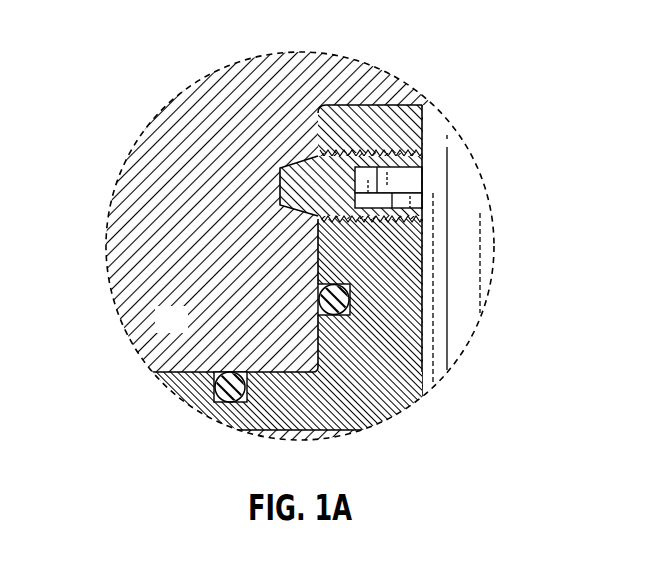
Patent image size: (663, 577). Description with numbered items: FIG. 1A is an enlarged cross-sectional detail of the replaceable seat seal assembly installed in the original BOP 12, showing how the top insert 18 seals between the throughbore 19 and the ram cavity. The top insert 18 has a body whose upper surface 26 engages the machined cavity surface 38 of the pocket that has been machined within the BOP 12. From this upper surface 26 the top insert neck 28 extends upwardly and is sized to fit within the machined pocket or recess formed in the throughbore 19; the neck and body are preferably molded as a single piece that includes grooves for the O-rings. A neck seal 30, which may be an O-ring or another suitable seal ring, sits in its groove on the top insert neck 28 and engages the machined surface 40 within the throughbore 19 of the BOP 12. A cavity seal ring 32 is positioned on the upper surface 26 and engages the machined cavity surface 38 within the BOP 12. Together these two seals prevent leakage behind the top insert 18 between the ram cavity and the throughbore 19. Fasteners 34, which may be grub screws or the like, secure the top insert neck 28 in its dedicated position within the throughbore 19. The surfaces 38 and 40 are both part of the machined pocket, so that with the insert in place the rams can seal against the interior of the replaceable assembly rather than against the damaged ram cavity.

The BOP 12 is at (300, 68).
The top insert 18 is at (406, 432).
The throughbore 19 is at (457, 187).
The upper surface 26 is at (272, 408).
The top insert neck 28 is at (390, 243).
The neck seal 30 is at (352, 312).
The cavity seal ring 32 is at (217, 395).
The fasteners 34 is at (328, 190).
The machined cavity surface 38 is at (190, 372).
The machined surface 40 is at (318, 260).